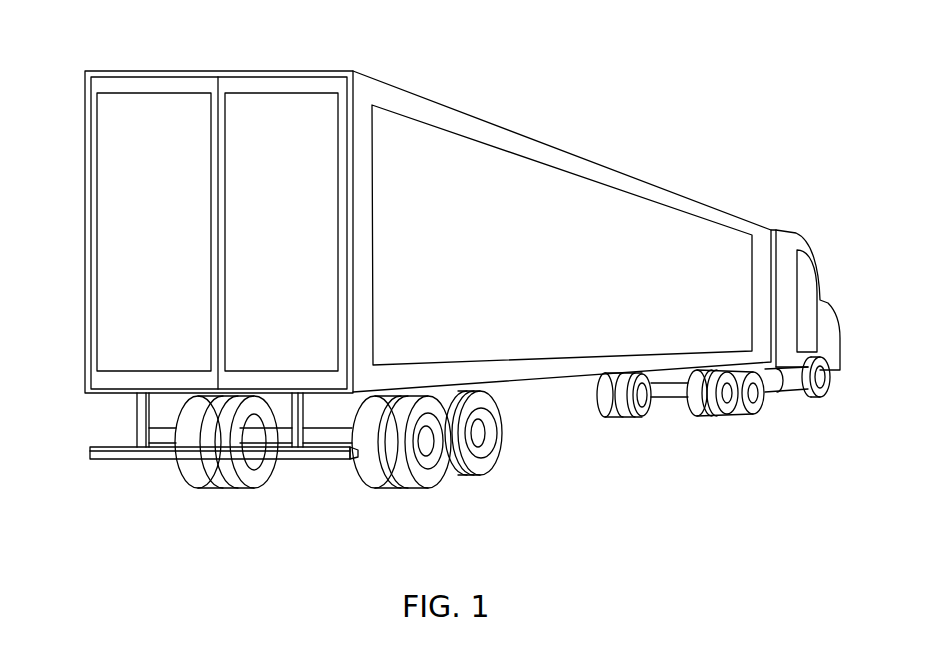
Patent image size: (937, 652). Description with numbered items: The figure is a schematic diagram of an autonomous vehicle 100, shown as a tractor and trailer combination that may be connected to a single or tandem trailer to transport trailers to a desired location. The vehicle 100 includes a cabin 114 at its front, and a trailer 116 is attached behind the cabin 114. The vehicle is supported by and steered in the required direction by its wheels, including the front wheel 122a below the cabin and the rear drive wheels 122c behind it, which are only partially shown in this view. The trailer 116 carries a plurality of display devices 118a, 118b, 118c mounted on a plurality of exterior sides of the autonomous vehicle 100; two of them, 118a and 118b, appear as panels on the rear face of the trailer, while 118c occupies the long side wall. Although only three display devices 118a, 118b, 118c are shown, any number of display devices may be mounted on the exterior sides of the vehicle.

The autonomous vehicle 100 is at (95, 40).
The cabin 114 is at (813, 265).
The trailer 116 is at (575, 155).
The display device 118a is at (124, 298).
The display device 118b is at (273, 325).
The display device 118c is at (510, 318).
The front wheel 122a is at (824, 397).
The rear drive wheels 122c is at (722, 415).